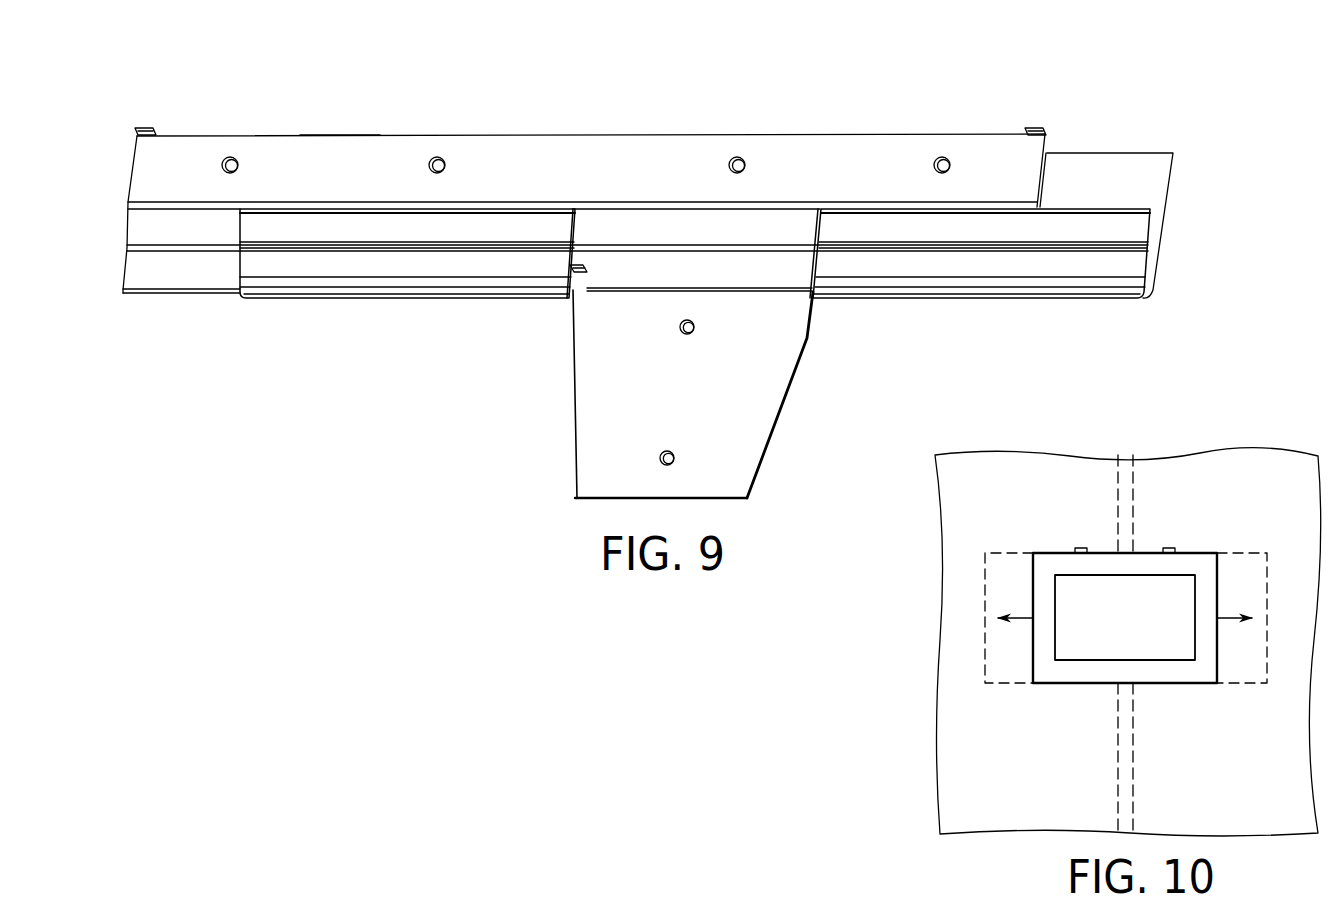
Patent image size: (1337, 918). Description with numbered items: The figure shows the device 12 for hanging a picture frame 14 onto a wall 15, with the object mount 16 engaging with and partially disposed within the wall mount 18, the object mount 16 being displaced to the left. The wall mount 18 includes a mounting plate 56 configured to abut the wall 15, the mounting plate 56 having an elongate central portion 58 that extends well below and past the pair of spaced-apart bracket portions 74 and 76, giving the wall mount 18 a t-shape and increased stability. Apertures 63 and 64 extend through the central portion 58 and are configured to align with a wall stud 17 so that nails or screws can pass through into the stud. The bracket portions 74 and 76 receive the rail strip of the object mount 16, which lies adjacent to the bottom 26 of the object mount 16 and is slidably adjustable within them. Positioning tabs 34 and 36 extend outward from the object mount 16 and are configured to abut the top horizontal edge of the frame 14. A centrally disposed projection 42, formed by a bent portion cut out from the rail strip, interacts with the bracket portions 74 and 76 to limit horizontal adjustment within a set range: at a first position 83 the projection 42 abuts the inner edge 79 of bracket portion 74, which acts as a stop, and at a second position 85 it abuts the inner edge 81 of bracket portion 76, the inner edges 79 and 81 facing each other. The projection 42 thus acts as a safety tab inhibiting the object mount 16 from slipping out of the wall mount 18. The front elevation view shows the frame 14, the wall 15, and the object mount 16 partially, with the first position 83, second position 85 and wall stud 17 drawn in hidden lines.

In FIG. 9, the device 12 is at (1132, 95).
In FIG. 10, the picture frame 14 is at (1197, 552).
In FIG. 10, the wall 15 is at (1007, 510).
In FIG. 9, the object mount 16 is at (548, 153).
In FIG. 10, the object mount 16 is at (1093, 540).
In FIG. 10, the wall stud 17 is at (1135, 483).
In FIG. 9, the wall mount 18 is at (1138, 185).
In FIG. 9, the bottom 26 is at (777, 272).
In FIG. 9, the positioning tab 34 is at (1035, 128).
In FIG. 10, the positioning tab 34 is at (1170, 548).
In FIG. 9, the positioning tab 36 is at (143, 127).
In FIG. 10, the positioning tab 36 is at (1078, 548).
In FIG. 9, the projection 42 is at (590, 265).
In FIG. 9, the mounting plate 56 is at (752, 386).
In FIG. 9, the central portion 58 is at (633, 404).
In FIG. 9, the aperture 63 is at (693, 333).
In FIG. 9, the aperture 64 is at (675, 460).
In FIG. 9, the bracket portion 74 is at (310, 308).
In FIG. 9, the bracket portion 76 is at (1010, 308).
In FIG. 9, the inner edge 79 is at (578, 256).
In FIG. 9, the inner edge 81 is at (813, 256).
In FIG. 9, the first position 83 is at (340, 112).
In FIG. 10, the first position 83 is at (1002, 688).
In FIG. 10, the second position 85 is at (1250, 688).